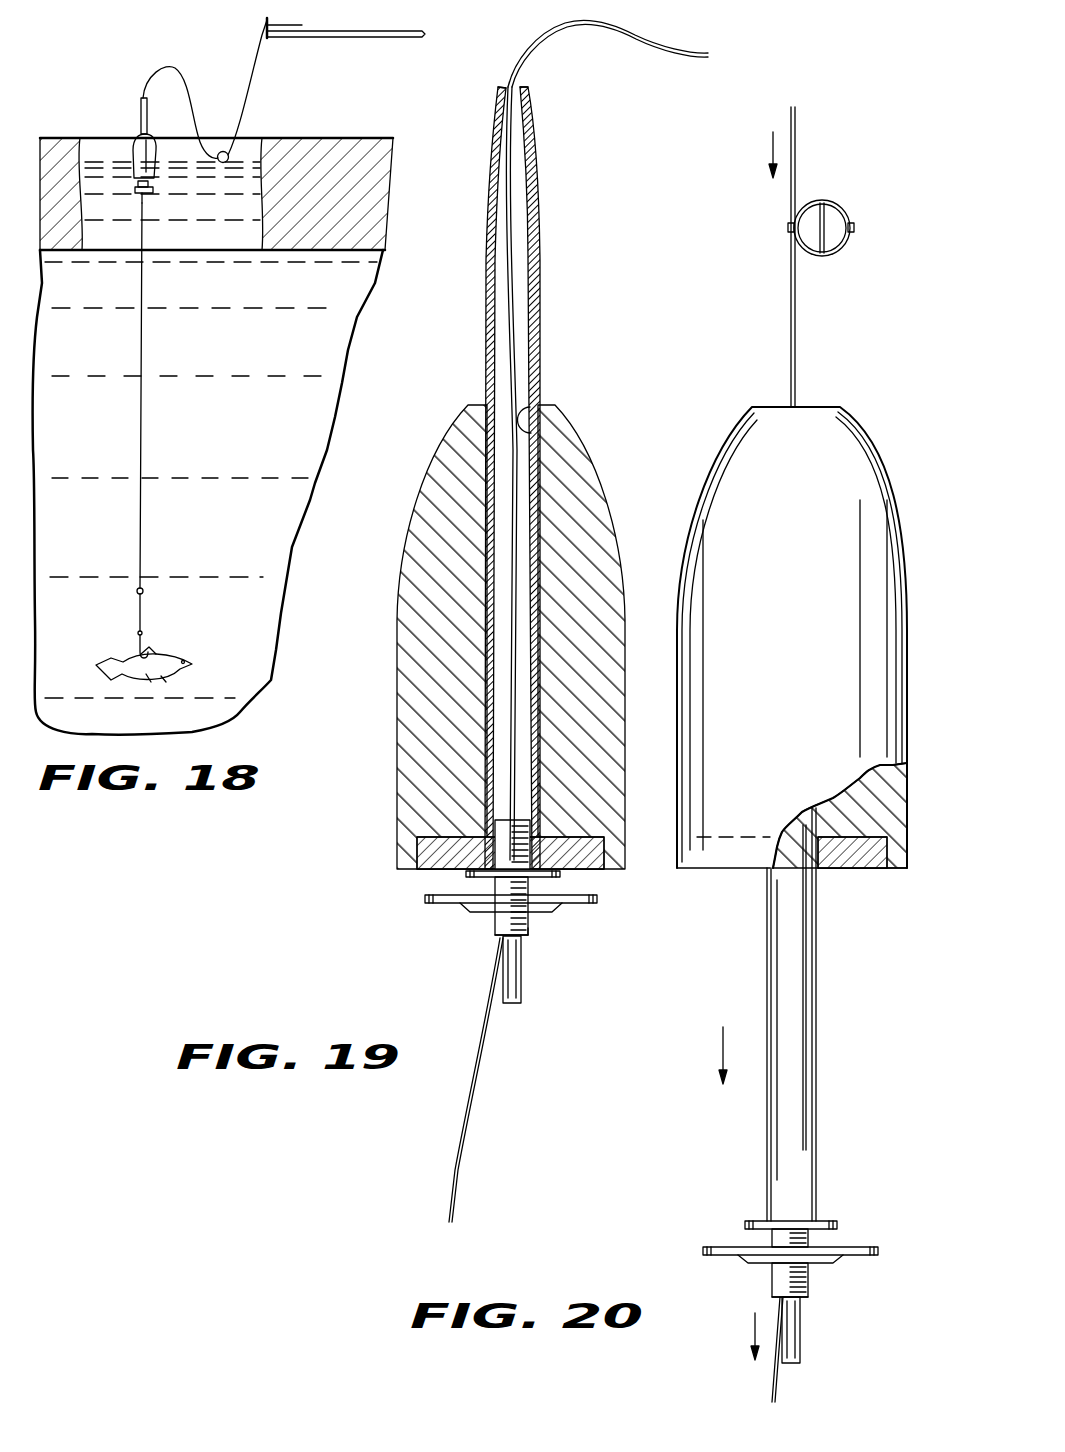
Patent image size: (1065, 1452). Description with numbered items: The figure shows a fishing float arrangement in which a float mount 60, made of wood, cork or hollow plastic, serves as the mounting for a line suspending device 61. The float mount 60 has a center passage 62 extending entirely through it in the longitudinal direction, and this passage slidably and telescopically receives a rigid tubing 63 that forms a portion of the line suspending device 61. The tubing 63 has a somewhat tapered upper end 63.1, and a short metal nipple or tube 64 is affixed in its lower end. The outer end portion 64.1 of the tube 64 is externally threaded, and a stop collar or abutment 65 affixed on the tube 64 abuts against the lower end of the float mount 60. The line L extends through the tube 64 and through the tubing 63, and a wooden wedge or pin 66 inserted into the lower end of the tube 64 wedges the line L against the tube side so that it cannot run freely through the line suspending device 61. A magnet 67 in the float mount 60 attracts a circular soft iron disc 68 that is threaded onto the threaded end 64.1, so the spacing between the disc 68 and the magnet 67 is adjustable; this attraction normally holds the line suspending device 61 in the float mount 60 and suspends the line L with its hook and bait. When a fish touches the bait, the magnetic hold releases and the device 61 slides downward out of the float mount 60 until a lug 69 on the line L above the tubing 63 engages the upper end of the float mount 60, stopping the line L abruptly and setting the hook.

In FIG. 18, the float mount 60 is at (137, 138).
In FIG. 19, the float mount 60 is at (611, 455).
In FIG. 20, the float mount 60 is at (878, 428).
In FIG. 18, the line suspending device 61 is at (150, 197).
In FIG. 19, the line suspending device 61 is at (478, 930).
In FIG. 20, the line suspending device 61 is at (830, 1103).
In FIG. 19, the center passage 62 is at (531, 405).
In FIG. 18, the rigid tubing 63 is at (140, 122).
In FIG. 19, the rigid tubing 63 is at (537, 243).
In FIG. 20, the rigid tubing 63 is at (788, 928).
In FIG. 19, the tapered upper end 63.1 is at (533, 103).
In FIG. 19, the metal nipple or tube 64 is at (540, 857).
In FIG. 20, the metal nipple or tube 64 is at (772, 1272).
In FIG. 19, the outer end portion 64.1 is at (530, 942).
In FIG. 19, the stop collar or abutment 65 is at (560, 873).
In FIG. 20, the stop collar or abutment 65 is at (834, 1220).
In FIG. 19, the wooden wedge or pin 66 is at (512, 1005).
In FIG. 20, the wooden wedge or pin 66 is at (800, 1335).
In FIG. 19, the magnet 67 is at (422, 849).
In FIG. 20, the magnet 67 is at (853, 860).
In FIG. 19, the circular metal disc 68 is at (422, 895).
In FIG. 20, the circular metal disc 68 is at (863, 1250).
In FIG. 18, the obstruction or lug 69 is at (224, 151).
In FIG. 20, the obstruction or lug 69 is at (830, 215).
In FIG. 18, the line L is at (140, 525).
In FIG. 19, the line L is at (447, 1165).
In FIG. 20, the line L is at (772, 1382).